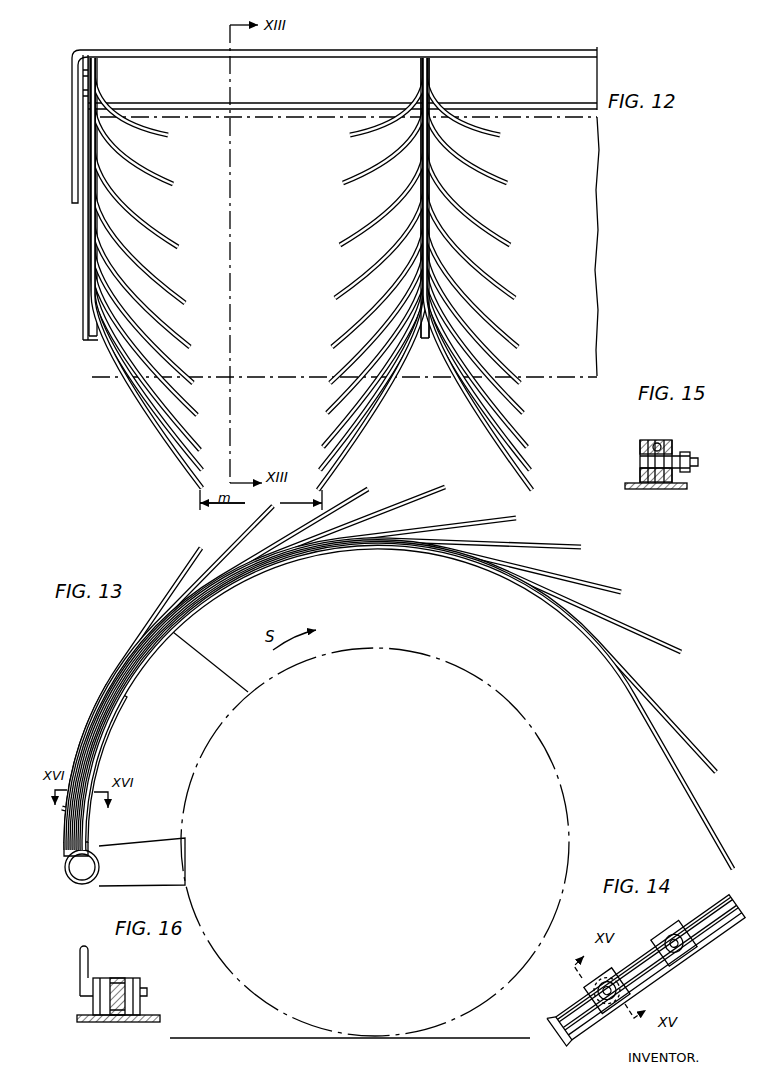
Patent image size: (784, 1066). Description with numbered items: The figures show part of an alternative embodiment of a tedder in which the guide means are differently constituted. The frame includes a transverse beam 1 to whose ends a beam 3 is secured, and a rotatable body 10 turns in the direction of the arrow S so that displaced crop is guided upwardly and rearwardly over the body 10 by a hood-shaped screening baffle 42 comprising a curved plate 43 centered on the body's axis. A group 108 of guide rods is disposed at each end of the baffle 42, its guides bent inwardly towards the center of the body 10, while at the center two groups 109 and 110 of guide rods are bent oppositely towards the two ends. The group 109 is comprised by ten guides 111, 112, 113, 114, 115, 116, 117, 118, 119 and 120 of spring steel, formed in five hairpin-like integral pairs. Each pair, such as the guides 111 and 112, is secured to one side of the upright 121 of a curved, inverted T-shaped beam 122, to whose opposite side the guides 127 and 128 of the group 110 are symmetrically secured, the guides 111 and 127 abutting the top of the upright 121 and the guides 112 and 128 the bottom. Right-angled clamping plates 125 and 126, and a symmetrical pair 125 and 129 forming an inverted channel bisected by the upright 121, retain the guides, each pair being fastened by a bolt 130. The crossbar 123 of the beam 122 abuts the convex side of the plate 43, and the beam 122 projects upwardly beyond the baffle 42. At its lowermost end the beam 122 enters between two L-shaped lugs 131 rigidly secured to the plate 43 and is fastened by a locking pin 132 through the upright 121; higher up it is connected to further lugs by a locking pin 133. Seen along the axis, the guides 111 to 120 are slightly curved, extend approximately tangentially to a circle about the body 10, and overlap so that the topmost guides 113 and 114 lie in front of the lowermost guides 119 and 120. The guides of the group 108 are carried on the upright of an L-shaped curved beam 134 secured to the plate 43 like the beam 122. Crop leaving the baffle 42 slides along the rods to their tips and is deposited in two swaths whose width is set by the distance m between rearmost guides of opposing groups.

In FIG. 13, the beam 1 is at (78, 884).
In FIG. 13, the beam 3 is at (150, 852).
In FIG. 13, the body 10 is at (557, 748).
In FIG. 13, the screening baffle 42 is at (104, 762).
In FIG. 14, the curved plate 43 is at (647, 963).
In FIG. 15, the curved plate 43 is at (680, 489).
In FIG. 12, the group of guide rods 108 is at (163, 457).
In FIG. 12, the group of guide rods 109 is at (362, 280).
In FIG. 12, the group of guide rods 110 is at (498, 455).
In FIG. 12, the guide 111 is at (350, 135).
In FIG. 13, the guide 111 is at (171, 590).
In FIG. 14, the guide 111 is at (644, 958).
In FIG. 15, the guide 111 is at (684, 448).
In FIG. 12, the guide 112 is at (343, 183).
In FIG. 13, the guide 112 is at (220, 560).
In FIG. 14, the guide 112 is at (649, 966).
In FIG. 15, the guide 112 is at (690, 472).
In FIG. 12, the guide 113 is at (340, 245).
In FIG. 13, the guide 113 is at (368, 489).
In FIG. 12, the guide 114 is at (335, 298).
In FIG. 13, the guide 114 is at (445, 487).
In FIG. 12, the guide 115 is at (332, 347).
In FIG. 13, the guide 115 is at (516, 518).
In FIG. 12, the guide 116 is at (330, 383).
In FIG. 13, the guide 116 is at (581, 547).
In FIG. 12, the guide 117 is at (327, 413).
In FIG. 13, the guide 117 is at (621, 592).
In FIG. 12, the guide 118 is at (323, 447).
In FIG. 13, the guide 118 is at (681, 652).
In FIG. 12, the guide 119 is at (320, 470).
In FIG. 13, the guide 119 is at (702, 749).
In FIG. 12, the guide 120 is at (318, 490).
In FIG. 13, the guide 120 is at (716, 846).
In FIG. 14, the upright 121 is at (607, 991).
In FIG. 15, the upright 121 is at (660, 440).
In FIG. 13, the beam 122 is at (94, 704).
In FIG. 14, the beam 122 is at (560, 1030).
In FIG. 15, the beam 122 is at (655, 489).
In FIG. 16, the beam 122 is at (123, 1022).
In FIG. 14, the crossbar 123 is at (651, 969).
In FIG. 14, the clamping plate 125 is at (607, 990).
In FIG. 15, the clamping plate 125 is at (668, 441).
In FIG. 14, the clamping plate 126 is at (674, 943).
In FIG. 15, the guide 127 is at (650, 440).
In FIG. 15, the guide 128 is at (640, 472).
In FIG. 15, the clamping plate 129 is at (640, 445).
In FIG. 14, the bolt 130 is at (673, 943).
In FIG. 15, the bolt 130 is at (698, 461).
In FIG. 16, the L-shaped lug 131 is at (140, 980).
In FIG. 13, the locking pin 132 is at (63, 820).
In FIG. 16, the locking pin 132 is at (88, 962).
In FIG. 13, the locking pin 133 is at (116, 698).
In FIG. 12, the L-shaped curved beam 134 is at (88, 341).